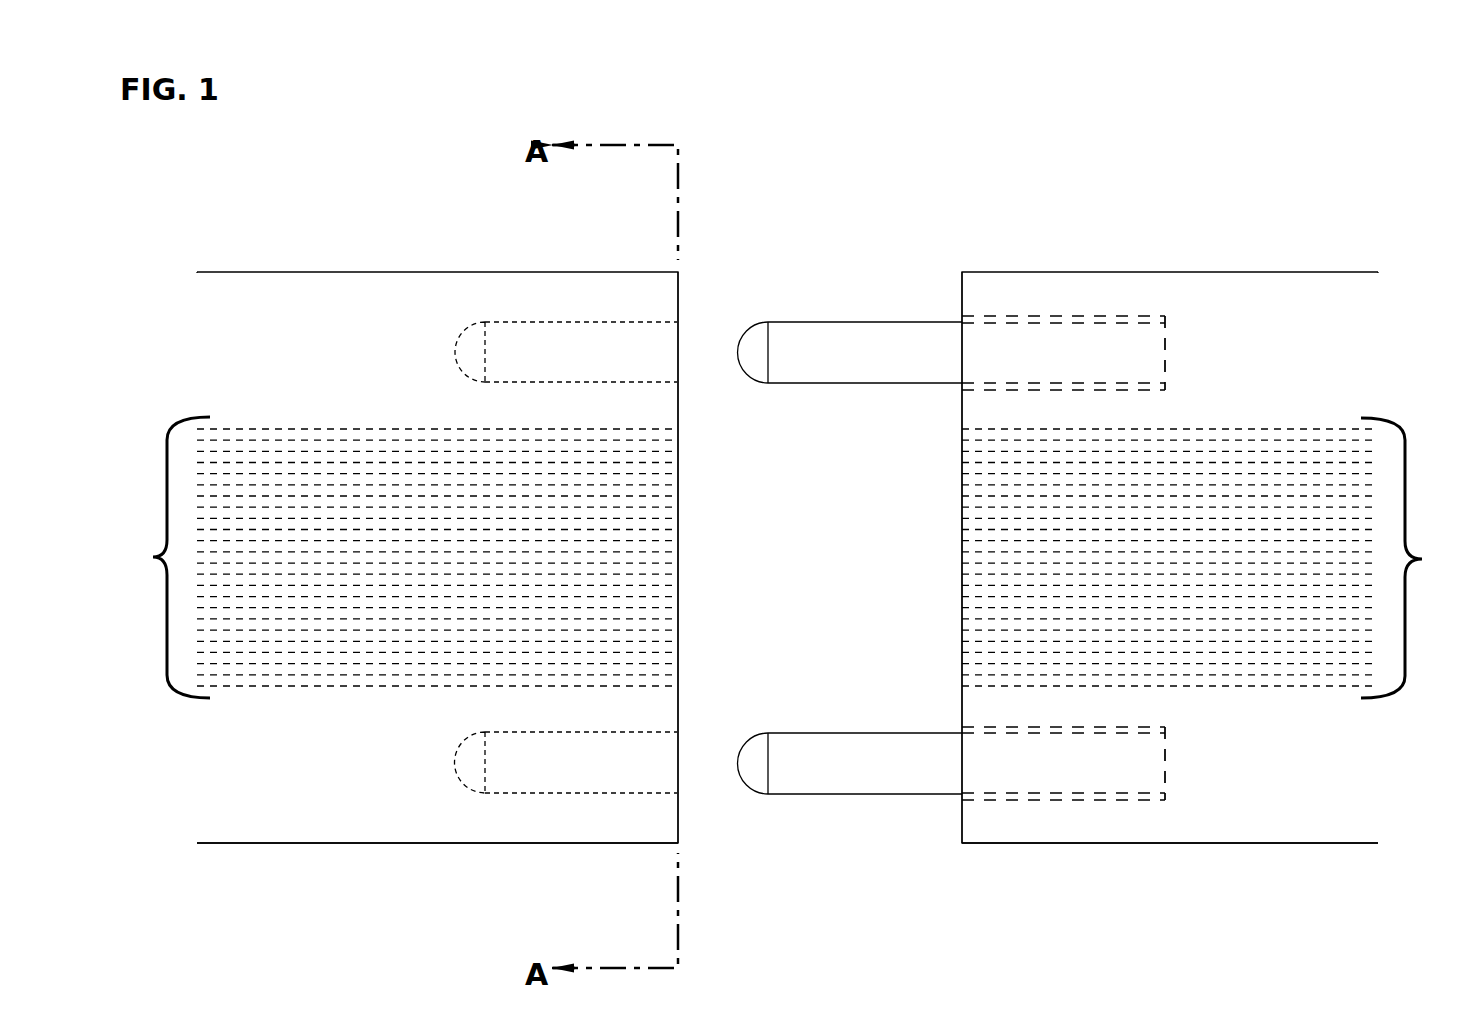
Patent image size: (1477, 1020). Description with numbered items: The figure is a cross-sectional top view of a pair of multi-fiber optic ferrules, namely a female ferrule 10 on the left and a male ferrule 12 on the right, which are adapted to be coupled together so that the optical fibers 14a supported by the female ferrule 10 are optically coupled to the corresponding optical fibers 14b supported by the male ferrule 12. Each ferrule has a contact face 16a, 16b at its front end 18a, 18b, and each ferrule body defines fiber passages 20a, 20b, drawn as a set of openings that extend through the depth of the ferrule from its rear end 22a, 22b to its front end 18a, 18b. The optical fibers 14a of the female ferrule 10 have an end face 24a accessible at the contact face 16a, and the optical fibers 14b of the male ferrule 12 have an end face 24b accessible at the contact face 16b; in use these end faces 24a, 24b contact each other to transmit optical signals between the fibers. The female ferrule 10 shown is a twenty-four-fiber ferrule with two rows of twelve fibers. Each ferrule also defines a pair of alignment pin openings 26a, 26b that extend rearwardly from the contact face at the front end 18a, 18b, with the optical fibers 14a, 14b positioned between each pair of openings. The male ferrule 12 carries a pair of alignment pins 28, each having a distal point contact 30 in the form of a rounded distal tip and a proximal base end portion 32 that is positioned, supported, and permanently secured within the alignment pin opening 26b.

The female ferrule 10 is at (463, 266).
The male ferrule 12 is at (1188, 269).
The optical fibers 14a is at (299, 692).
The optical fibers 14b is at (1272, 690).
The contact face 16a is at (678, 708).
The contact face 16b is at (962, 702).
The front end 18a is at (690, 290).
The front end 18b is at (956, 292).
The fiber passages 20a is at (387, 557).
The fiber passages 20b is at (1216, 558).
The rear end 22a is at (192, 326).
The rear end 22b is at (1399, 277).
The end face 24a is at (683, 553).
The end face 24b is at (960, 538).
The alignment pin openings 26a is at (573, 353).
The alignment pin openings 26b is at (1088, 313).
The alignment pins 28 is at (845, 313).
The distal point contacts 30 is at (754, 370).
The proximal base end portions 32 is at (1141, 366).